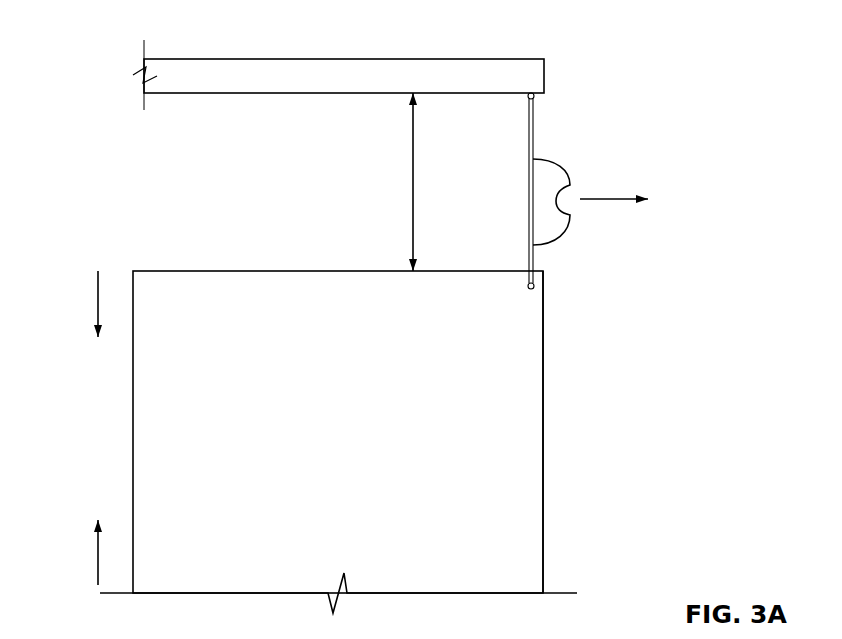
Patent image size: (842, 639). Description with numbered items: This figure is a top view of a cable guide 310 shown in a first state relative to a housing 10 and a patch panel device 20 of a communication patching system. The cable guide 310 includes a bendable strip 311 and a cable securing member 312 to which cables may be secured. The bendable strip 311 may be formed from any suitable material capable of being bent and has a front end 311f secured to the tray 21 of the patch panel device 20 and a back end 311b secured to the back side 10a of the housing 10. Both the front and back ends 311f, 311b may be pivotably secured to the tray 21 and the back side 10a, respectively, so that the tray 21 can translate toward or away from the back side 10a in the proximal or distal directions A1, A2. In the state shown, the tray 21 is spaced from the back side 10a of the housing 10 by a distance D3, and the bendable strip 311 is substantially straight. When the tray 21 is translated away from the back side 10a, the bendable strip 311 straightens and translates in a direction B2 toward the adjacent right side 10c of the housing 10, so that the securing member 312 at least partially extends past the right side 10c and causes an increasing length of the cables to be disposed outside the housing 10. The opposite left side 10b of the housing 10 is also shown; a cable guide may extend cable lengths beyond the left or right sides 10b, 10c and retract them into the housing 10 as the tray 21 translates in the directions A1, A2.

The housing 10 is at (290, 65).
The back side of housing 10a is at (165, 76).
The left side of housing 10b is at (14, 431).
The right side of housing 10c is at (645, 391).
The patch panel device 20 is at (587, 552).
The tray 21 is at (517, 467).
The cable guide 310 is at (615, 171).
The bendable strip 311 is at (534, 143).
The back end of bendable strip 311b is at (533, 93).
The front end of bendable strip 311f is at (531, 290).
The cable securing member 312 is at (550, 228).
The direction B2 is at (618, 198).
The proximal direction A1 is at (95, 309).
The distal direction A2 is at (95, 563).
The distance D3 is at (410, 188).